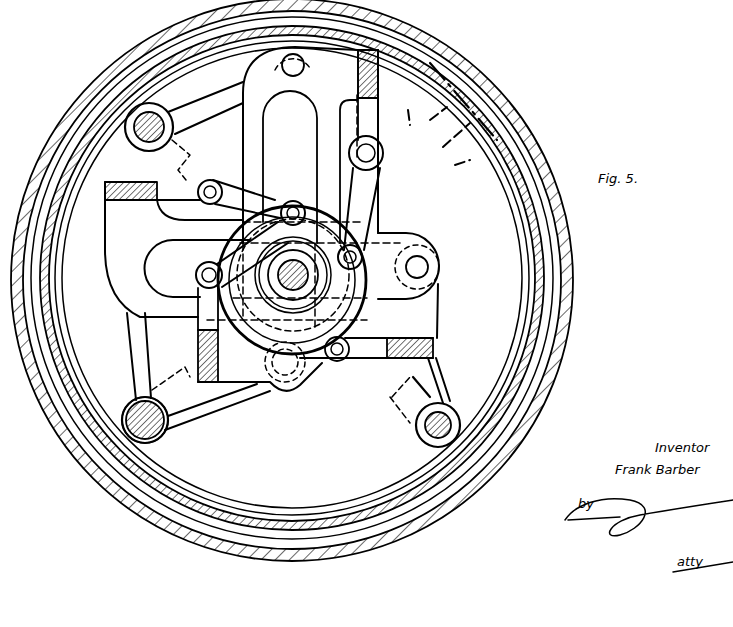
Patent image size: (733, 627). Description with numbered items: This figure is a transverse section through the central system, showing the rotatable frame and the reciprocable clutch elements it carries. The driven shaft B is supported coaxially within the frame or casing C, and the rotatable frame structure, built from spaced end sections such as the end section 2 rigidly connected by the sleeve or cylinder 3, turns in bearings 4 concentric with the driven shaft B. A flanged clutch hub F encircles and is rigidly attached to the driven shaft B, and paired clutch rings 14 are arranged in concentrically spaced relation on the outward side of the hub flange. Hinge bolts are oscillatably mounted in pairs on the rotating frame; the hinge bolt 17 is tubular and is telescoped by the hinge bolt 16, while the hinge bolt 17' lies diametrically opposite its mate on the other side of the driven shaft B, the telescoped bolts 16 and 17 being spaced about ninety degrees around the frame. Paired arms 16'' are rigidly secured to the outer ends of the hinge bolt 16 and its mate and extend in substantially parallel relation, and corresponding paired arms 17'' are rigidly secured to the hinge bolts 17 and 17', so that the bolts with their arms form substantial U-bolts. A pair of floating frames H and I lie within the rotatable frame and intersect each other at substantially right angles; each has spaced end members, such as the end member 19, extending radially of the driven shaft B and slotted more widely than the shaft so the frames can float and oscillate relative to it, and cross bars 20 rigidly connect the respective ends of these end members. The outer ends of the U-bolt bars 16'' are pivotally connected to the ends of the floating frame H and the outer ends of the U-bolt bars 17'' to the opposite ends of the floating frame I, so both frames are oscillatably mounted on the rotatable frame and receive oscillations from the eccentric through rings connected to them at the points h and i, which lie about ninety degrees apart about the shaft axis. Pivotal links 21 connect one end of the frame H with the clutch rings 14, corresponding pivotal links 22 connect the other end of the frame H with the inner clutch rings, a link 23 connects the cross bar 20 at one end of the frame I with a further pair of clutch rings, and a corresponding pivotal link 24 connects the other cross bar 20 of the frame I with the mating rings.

The end section 2 is at (530, 255).
The sleeve or cylinder 3 is at (530, 210).
The bearings 4 is at (517, 108).
The frame or casing C is at (497, 84).
The point of connection h is at (312, 80).
The floating frame H is at (380, 83).
The cross bars 20 is at (378, 101).
The paired arms 16'' is at (197, 250).
The pivotal link 24 is at (233, 190).
The end member 19 is at (323, 152).
The pivotal links 22 is at (291, 205).
The floating frame I is at (120, 202).
The pivotal links 21 is at (366, 196).
The point of connection i is at (431, 261).
The driven shaft B is at (305, 282).
The clutch rings 14 is at (280, 310).
The link 23 is at (322, 370).
The flanged clutch hub F is at (357, 357).
The paired arms 17'' is at (288, 368).
The hinge bolt 17' is at (425, 429).
The hinge bolt 17 is at (135, 416).
The hinge bolt 16 is at (159, 429).